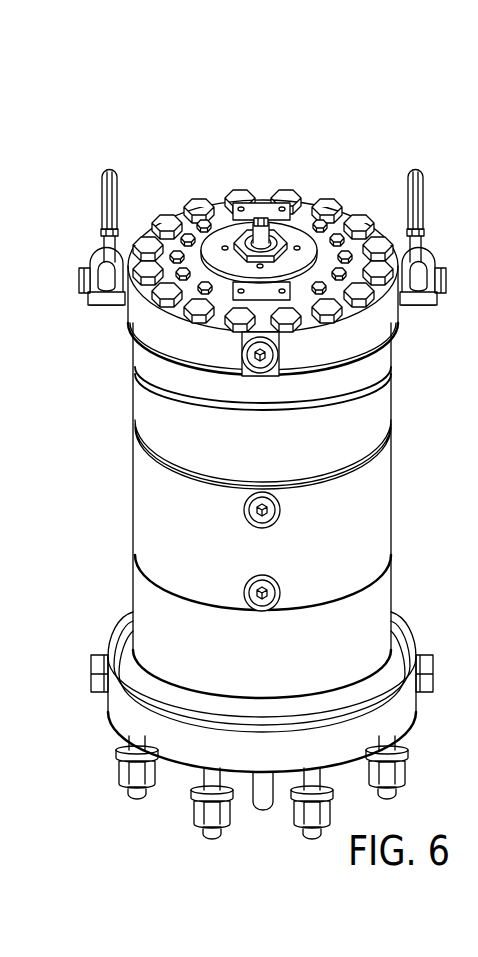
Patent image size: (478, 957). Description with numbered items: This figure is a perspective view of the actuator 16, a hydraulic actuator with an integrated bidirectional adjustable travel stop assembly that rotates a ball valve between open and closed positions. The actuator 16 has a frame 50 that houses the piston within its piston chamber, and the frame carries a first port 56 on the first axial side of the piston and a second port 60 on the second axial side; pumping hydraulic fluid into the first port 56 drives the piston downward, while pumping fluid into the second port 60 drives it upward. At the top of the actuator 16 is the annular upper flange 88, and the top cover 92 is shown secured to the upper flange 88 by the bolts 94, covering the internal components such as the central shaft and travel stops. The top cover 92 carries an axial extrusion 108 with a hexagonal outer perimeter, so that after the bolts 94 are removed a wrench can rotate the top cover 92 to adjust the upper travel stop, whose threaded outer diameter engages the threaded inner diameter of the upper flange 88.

The actuator 16 is at (271, 456).
The frame 50 is at (393, 493).
The first port 56 is at (273, 357).
The second port 60 is at (273, 591).
The upper flange 88 is at (157, 325).
The top cover 92 is at (303, 238).
The bolts 94 is at (180, 235).
The axial extrusion 108 is at (233, 240).